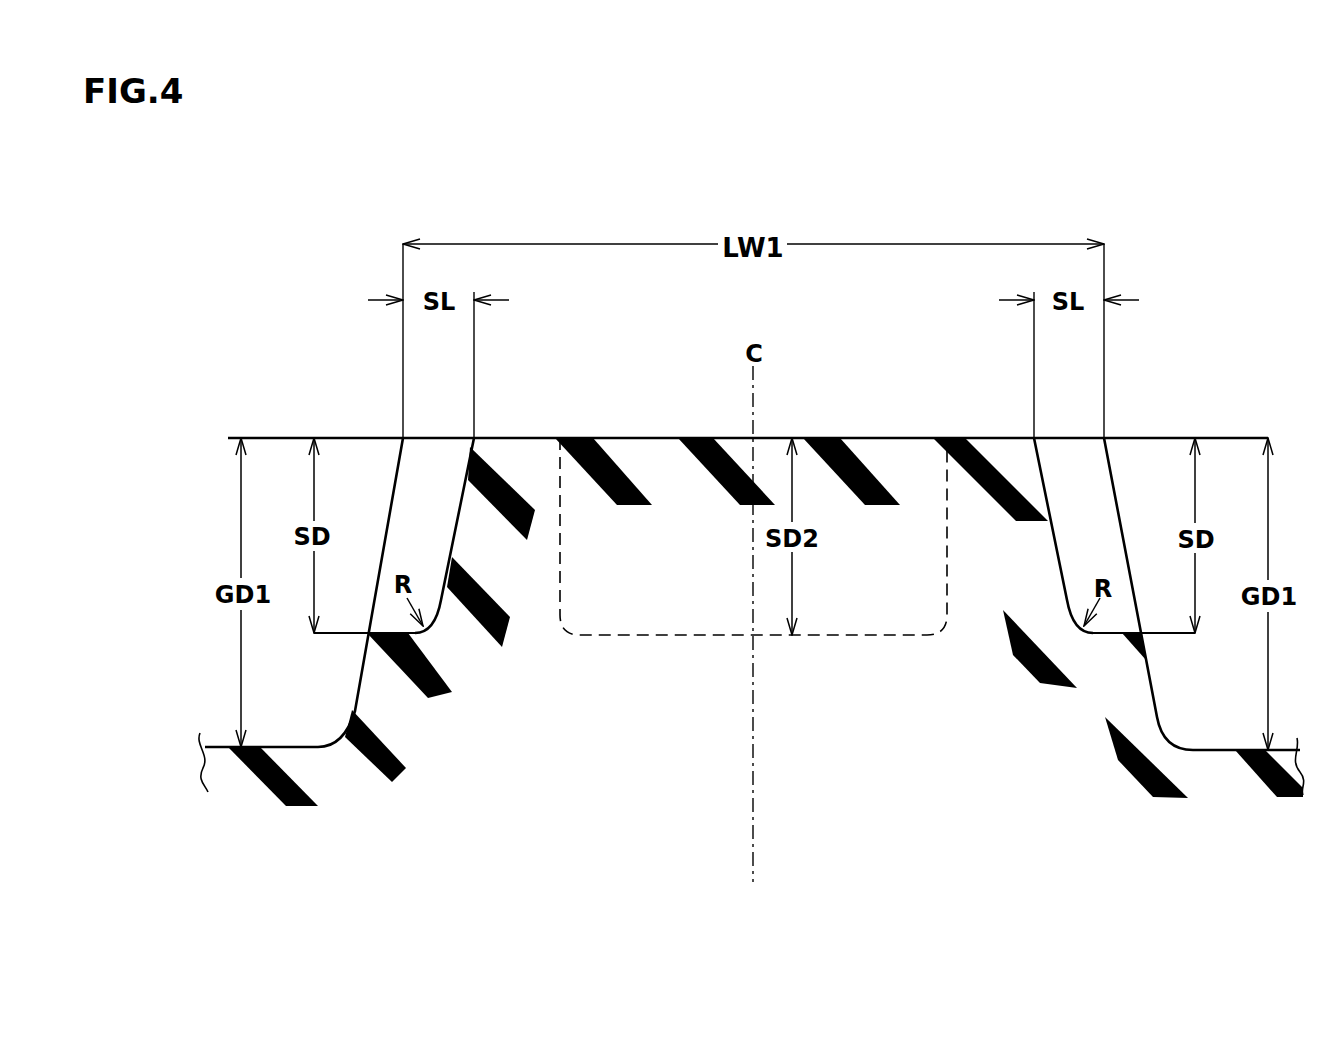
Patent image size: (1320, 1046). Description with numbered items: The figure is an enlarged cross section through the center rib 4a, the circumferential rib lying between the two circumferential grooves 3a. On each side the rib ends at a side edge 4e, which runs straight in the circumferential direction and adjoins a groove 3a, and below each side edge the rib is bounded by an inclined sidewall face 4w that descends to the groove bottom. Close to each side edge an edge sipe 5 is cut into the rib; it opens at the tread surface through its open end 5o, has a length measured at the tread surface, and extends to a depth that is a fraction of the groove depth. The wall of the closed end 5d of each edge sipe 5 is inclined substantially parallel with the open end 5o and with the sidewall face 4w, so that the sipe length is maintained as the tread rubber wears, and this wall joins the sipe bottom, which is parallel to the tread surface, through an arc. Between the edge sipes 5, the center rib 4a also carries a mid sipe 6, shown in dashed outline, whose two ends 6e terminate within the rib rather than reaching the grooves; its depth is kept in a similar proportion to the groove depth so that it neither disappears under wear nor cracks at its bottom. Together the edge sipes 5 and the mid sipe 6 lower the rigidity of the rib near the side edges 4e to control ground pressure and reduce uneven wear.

The circumferential groove 3a is at (292, 745).
The center rib 4a is at (845, 400).
The side edge 4e is at (403, 438).
The sidewall face 4w is at (352, 684).
The edge sipe 5 is at (1093, 481).
The open end 5o is at (382, 556).
The closed end 5d is at (462, 537).
The mid sipe 6 is at (663, 635).
The end 6e is at (560, 527).